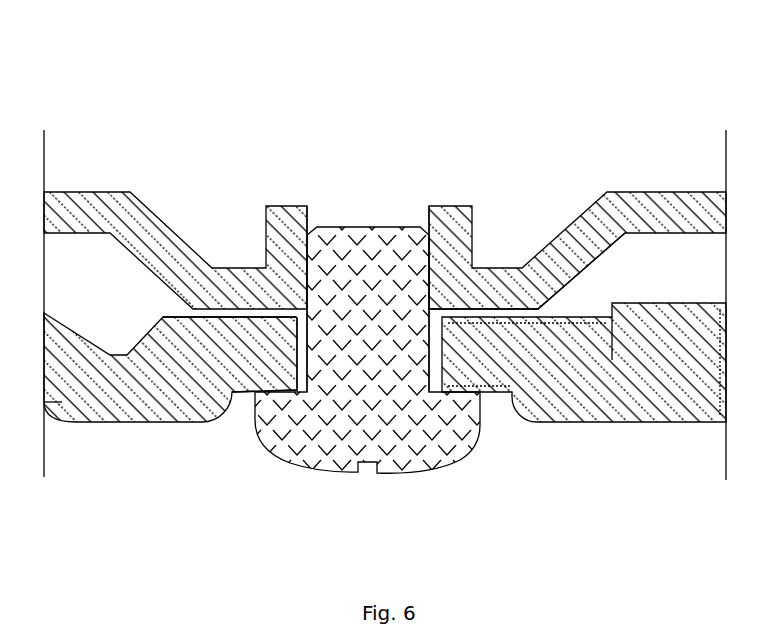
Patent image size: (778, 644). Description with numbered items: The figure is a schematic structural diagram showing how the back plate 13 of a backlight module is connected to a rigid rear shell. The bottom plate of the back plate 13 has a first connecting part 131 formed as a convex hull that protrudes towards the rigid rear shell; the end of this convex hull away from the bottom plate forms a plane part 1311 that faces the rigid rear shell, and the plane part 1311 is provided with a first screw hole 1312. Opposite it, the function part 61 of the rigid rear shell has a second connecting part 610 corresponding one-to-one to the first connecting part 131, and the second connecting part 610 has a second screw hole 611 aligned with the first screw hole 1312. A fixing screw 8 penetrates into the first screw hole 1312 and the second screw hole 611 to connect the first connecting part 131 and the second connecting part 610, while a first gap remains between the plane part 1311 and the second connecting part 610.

The back plate 13 is at (385, 210).
The first connecting part 131 is at (577, 198).
The plane part 1311 is at (510, 308).
The first screw hole 1312 is at (352, 228).
The fixing screw 8 is at (340, 345).
The function part 61 is at (385, 436).
The second connecting part 610 is at (582, 388).
The second screw hole 611 is at (300, 373).